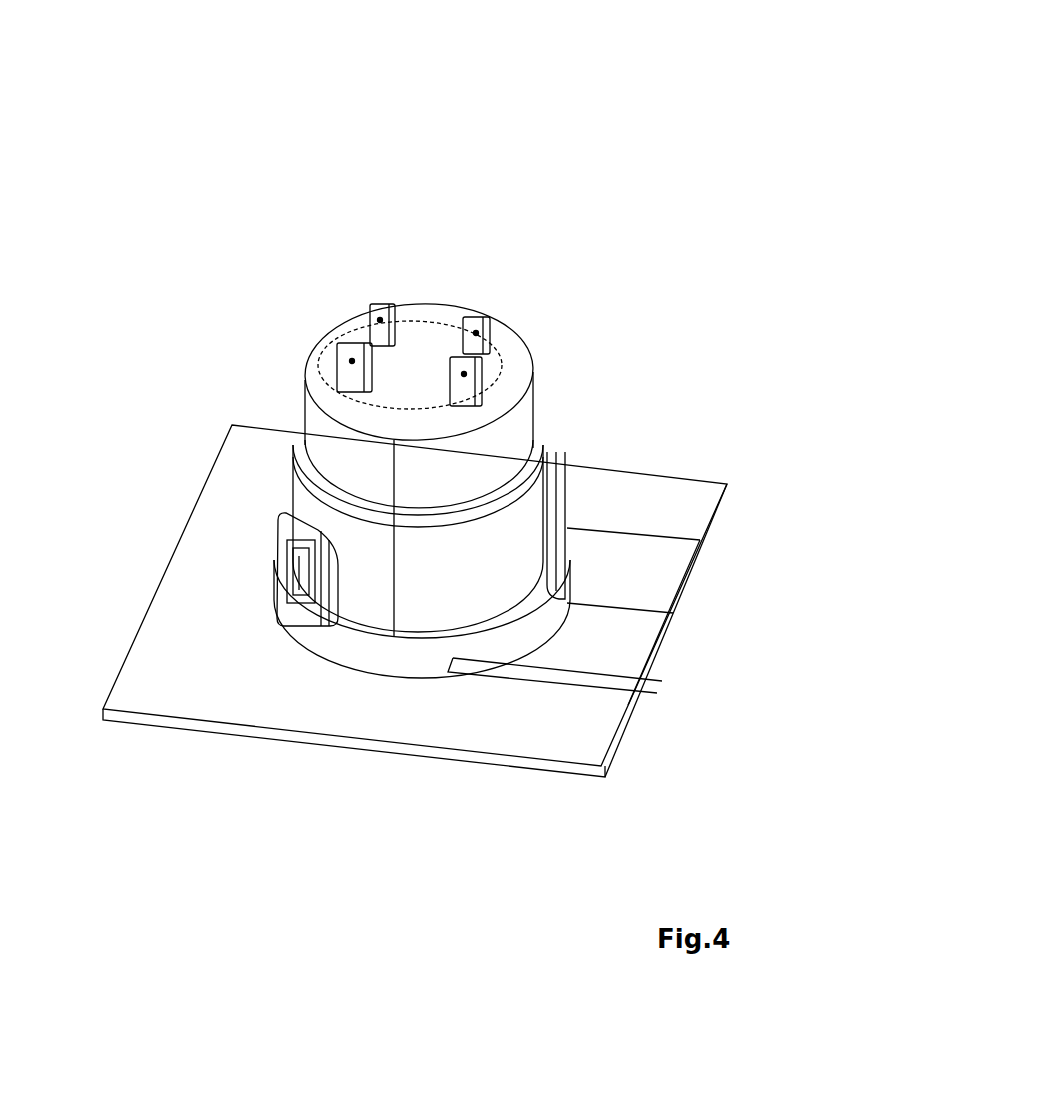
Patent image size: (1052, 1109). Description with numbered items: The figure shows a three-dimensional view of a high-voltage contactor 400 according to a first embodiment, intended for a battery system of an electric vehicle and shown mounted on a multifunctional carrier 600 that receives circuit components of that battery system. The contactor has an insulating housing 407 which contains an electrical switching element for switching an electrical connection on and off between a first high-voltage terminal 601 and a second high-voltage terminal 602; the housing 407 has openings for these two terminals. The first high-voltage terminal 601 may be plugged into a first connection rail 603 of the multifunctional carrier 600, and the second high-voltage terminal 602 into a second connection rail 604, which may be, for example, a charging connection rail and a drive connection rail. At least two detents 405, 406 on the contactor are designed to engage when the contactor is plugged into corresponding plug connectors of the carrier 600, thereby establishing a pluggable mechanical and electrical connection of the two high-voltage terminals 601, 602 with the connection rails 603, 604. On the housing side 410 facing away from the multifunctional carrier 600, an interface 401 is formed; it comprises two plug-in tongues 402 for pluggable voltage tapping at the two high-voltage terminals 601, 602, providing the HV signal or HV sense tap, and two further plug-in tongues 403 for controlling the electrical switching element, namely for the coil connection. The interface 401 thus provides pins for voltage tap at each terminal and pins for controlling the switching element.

The high-voltage contactor 400 is at (114, 79).
The interface 401 is at (392, 340).
The plug-in tongues 402 is at (350, 312).
The plug-in tongues 403 is at (298, 355).
The detent 405 is at (277, 595).
The detent 406 is at (571, 497).
The insulating housing 407 is at (336, 652).
The housing side 410 is at (515, 366).
The multifunctional carrier 600 is at (195, 496).
The first high-voltage terminal 601 is at (514, 655).
The second high-voltage terminal 602 is at (571, 590).
The first connection rail 603 is at (668, 656).
The second connection rail 604 is at (696, 593).